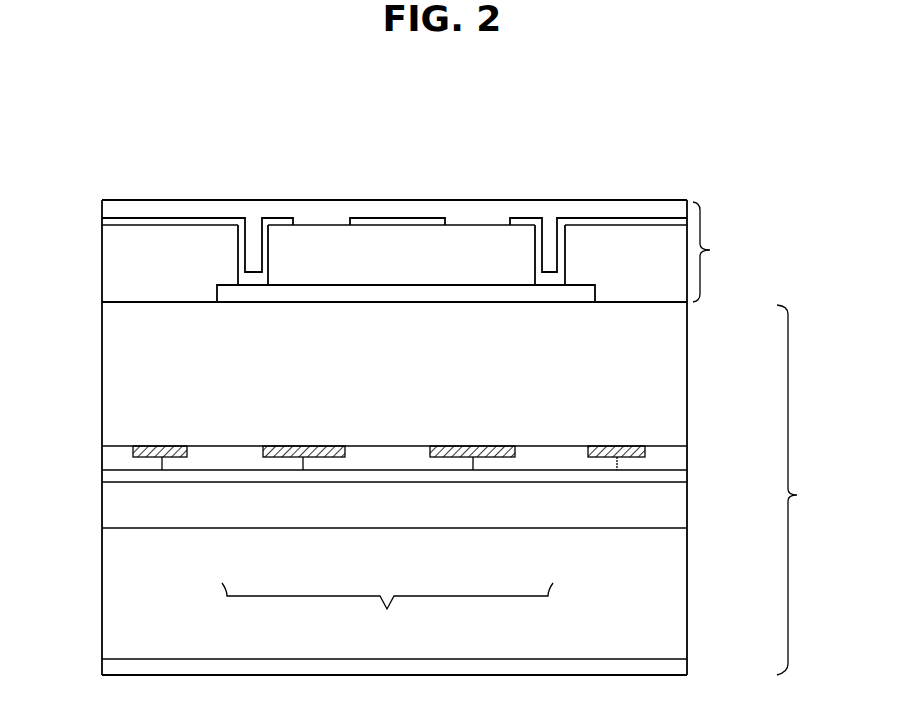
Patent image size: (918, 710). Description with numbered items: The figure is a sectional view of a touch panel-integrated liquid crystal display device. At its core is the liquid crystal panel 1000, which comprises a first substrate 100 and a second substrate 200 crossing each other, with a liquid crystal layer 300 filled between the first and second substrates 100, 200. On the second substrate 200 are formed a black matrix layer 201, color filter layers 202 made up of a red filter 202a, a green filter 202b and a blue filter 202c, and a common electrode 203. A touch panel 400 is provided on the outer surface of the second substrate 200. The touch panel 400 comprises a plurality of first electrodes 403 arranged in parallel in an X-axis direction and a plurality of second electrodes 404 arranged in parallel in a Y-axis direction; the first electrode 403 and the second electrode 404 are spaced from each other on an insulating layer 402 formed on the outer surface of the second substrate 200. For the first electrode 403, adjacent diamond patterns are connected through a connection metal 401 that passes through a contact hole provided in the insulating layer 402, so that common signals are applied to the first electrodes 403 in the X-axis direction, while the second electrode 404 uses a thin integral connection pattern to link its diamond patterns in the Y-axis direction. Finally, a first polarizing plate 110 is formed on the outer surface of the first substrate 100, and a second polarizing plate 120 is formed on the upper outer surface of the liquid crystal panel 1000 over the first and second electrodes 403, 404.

The first substrate 100 is at (678, 597).
The first polarizing plate 110 is at (680, 668).
The second polarizing plate 120 is at (634, 208).
The second substrate 200 is at (678, 355).
The black matrix layer 201 is at (627, 446).
The color filter layers 202 is at (387, 611).
The R color filter layer 202a is at (220, 462).
The G color filter layer 202b is at (385, 462).
The B color filter layer 202c is at (550, 462).
The common electrode 203 is at (675, 476).
The liquid crystal layer 300 is at (676, 513).
The touch panel 400 is at (427, 252).
The connection metal 401 is at (398, 292).
The insulating layer 402 is at (110, 257).
The first electrode 403 is at (275, 215).
The second electrode 404 is at (397, 215).
The liquid crystal panel 1000 is at (812, 490).